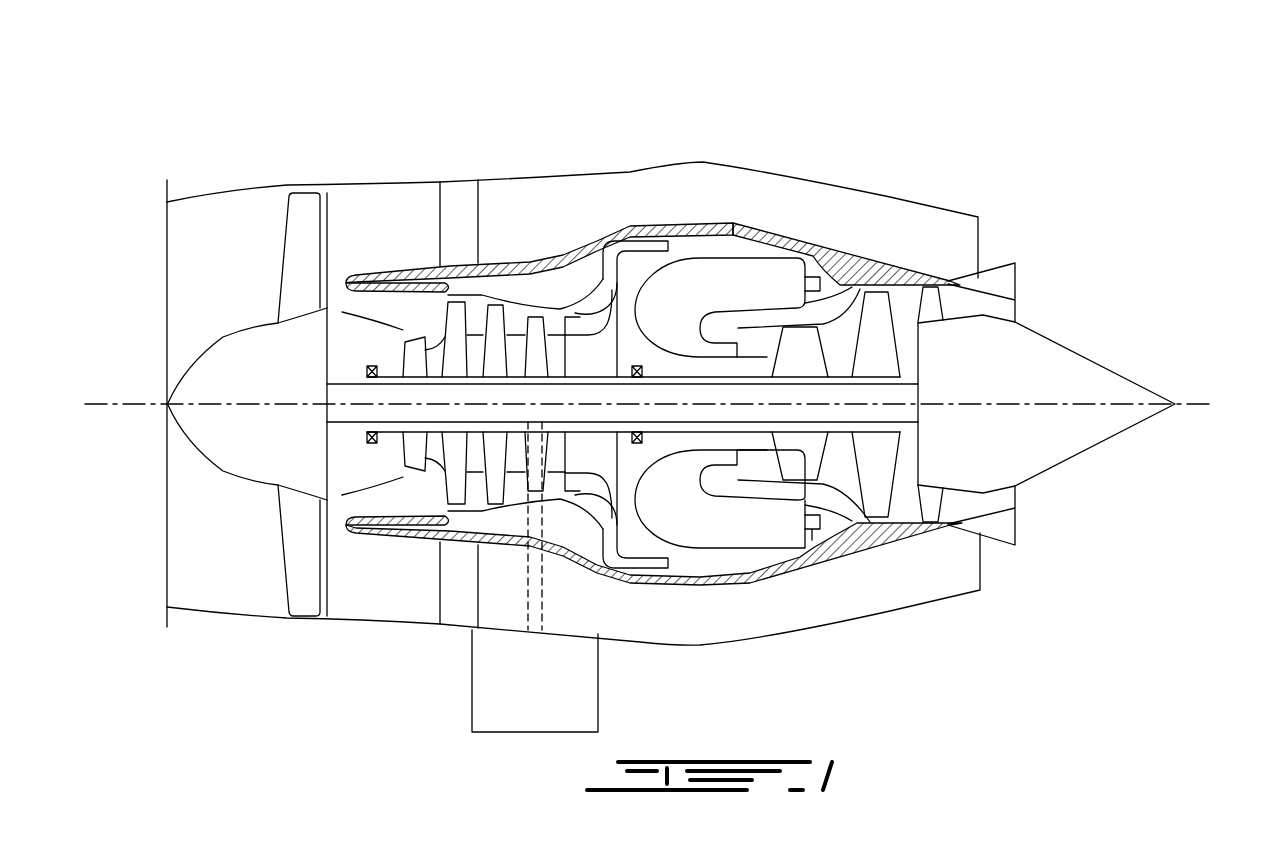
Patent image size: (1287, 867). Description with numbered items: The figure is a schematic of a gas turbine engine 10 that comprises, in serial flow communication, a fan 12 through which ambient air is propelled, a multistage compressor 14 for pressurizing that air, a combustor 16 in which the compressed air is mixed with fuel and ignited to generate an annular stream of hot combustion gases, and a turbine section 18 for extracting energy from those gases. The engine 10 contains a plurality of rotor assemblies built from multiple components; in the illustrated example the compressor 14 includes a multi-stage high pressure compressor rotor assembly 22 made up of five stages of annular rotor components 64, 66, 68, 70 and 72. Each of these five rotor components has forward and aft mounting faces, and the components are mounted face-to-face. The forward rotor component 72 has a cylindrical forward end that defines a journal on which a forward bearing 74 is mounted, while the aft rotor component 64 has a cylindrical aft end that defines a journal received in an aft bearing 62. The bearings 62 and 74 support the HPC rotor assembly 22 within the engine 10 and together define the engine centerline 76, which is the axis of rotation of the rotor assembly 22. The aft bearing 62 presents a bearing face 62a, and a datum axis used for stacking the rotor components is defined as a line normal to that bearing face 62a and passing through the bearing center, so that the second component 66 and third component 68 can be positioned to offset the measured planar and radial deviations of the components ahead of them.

The gas turbine engine 10 is at (856, 121).
The fan 12 is at (300, 540).
The multistage compressor 14 is at (457, 568).
The combustor 16 is at (720, 275).
The turbine section 18 is at (840, 518).
The high pressure compressor rotor assembly 22 is at (277, 73).
The aft bearing 62 is at (637, 446).
The bearing face 62a is at (588, 445).
The aft rotor component 64 is at (588, 335).
The second rotor component 66 is at (538, 320).
The third rotor component 68 is at (495, 320).
The rotor component 70 is at (455, 305).
The forward rotor component 72 is at (415, 352).
The forward bearing 74 is at (365, 366).
The engine centerline 76 is at (1198, 400).